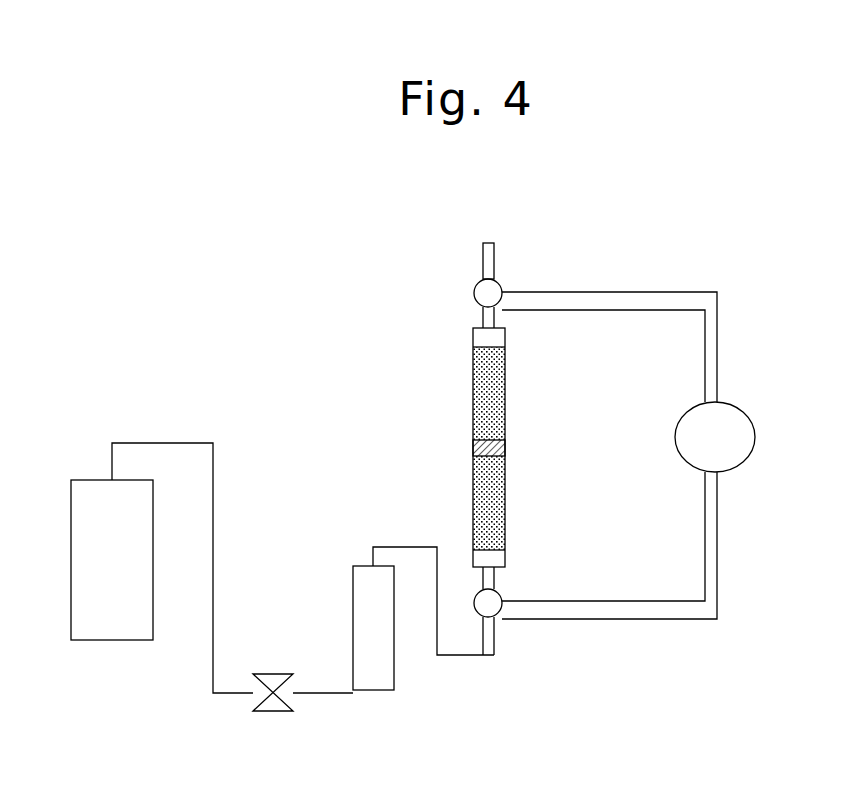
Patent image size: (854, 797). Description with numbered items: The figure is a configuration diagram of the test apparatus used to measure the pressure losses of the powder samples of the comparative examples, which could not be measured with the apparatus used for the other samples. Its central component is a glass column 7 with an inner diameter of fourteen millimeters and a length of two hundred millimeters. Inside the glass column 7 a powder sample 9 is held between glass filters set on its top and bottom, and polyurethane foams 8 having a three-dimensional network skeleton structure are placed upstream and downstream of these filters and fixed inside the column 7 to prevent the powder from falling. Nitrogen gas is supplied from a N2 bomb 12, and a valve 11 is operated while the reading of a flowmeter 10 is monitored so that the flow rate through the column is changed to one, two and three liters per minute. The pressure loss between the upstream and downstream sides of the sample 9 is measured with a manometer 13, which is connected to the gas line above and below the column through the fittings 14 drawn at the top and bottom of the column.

The glass column 7 is at (473, 401).
The polyurethane foam 8 is at (493, 393).
The powder sample 9 is at (475, 452).
The flowmeter 10 is at (374, 672).
The valve 11 is at (258, 715).
The N2 bomb 12 is at (71, 627).
The manometer 13 is at (740, 462).
The three-way valve 14 is at (488, 293).